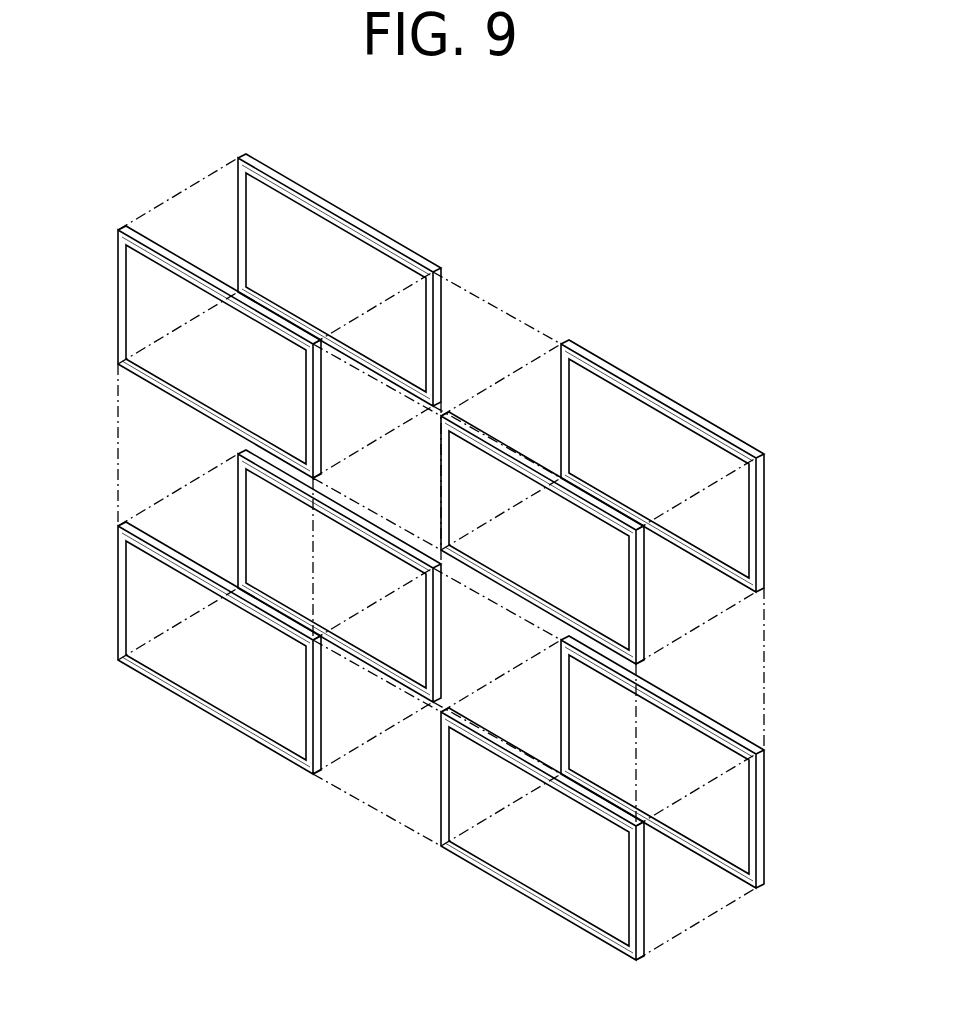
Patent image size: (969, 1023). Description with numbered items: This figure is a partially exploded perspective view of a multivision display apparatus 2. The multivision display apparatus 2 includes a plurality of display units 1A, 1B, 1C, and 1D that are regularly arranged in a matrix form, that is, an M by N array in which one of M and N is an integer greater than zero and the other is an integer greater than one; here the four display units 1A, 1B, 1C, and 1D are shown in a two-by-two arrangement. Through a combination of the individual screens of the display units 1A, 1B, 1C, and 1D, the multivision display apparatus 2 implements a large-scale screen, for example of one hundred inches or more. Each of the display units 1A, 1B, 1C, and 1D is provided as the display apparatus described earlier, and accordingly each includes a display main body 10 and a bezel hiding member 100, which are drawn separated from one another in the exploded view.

The display unit 1A is at (259, 142).
The display unit 1B is at (783, 495).
The display unit 1C is at (100, 634).
The display unit 1D is at (783, 811).
The multivision display apparatus 2 is at (545, 254).
The display main body 10 is at (238, 158).
The bezel hiding member 100 is at (117, 229).